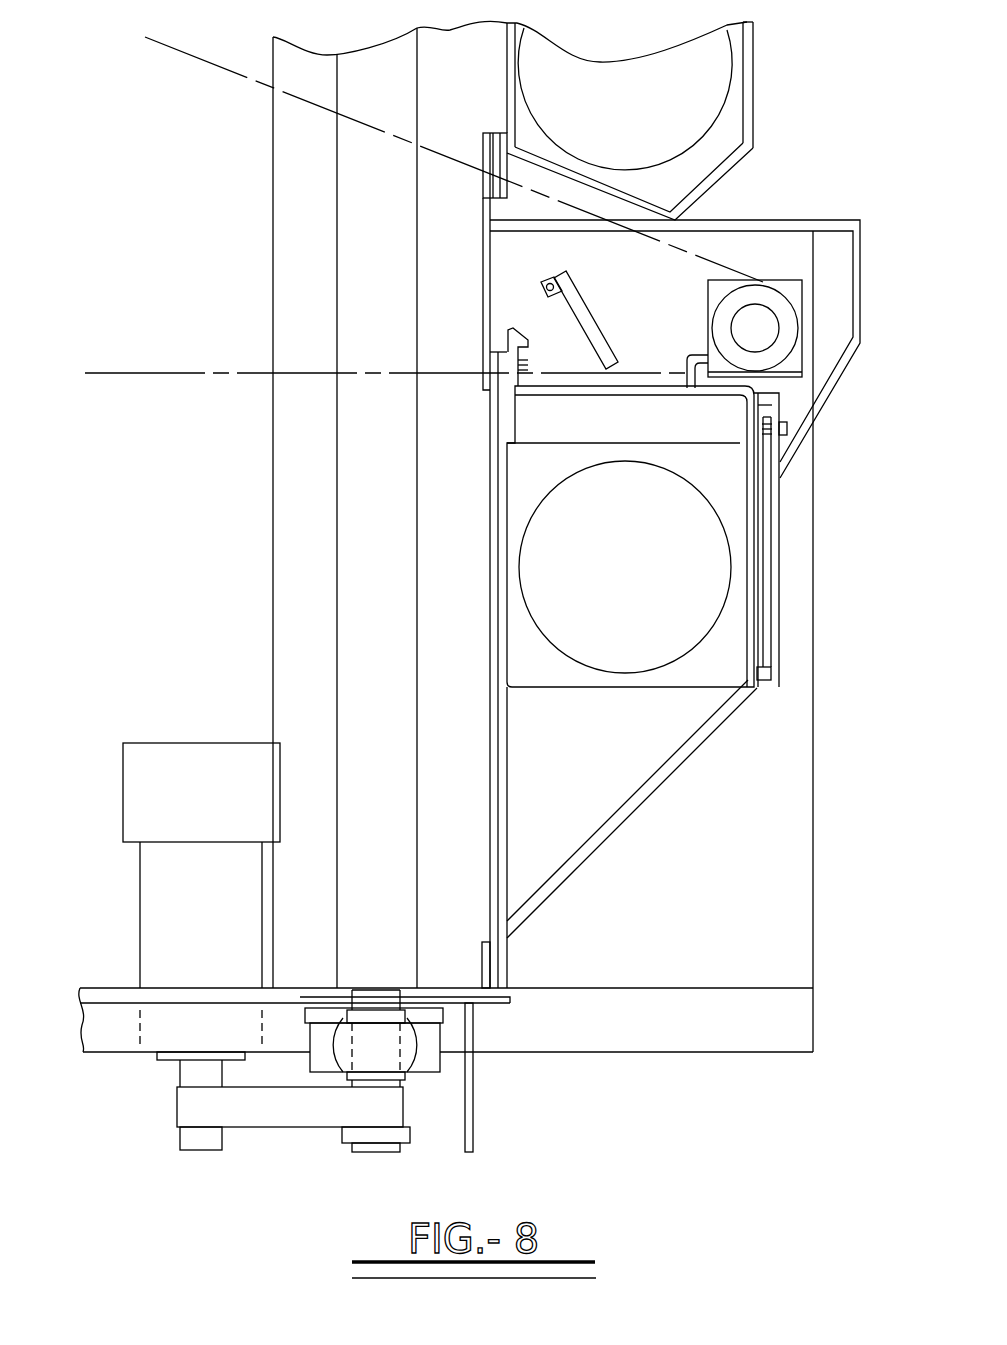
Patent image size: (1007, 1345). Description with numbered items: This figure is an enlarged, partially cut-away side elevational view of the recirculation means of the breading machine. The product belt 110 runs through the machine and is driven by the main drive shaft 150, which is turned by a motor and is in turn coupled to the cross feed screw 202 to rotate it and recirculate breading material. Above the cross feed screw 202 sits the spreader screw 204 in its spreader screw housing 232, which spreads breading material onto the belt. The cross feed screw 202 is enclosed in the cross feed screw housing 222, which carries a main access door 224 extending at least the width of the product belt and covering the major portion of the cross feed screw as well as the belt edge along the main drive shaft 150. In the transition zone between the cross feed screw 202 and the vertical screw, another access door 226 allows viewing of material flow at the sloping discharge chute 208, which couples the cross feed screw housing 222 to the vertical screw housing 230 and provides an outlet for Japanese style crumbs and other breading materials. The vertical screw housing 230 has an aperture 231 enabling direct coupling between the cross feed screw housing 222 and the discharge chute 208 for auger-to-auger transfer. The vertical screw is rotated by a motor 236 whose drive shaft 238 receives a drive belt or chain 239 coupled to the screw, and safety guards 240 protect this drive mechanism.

The product belt 110 is at (203, 373).
The main drive shaft 150 is at (752, 323).
The cross feed screw 202 is at (695, 594).
The spreader screw 204 is at (688, 118).
The discharge chute 208 is at (647, 793).
The cross feed screw housing 222 is at (727, 664).
The main access door 224 is at (830, 399).
The access door 226 is at (780, 550).
The vertical screw housing 230 is at (365, 552).
The aperture 231 is at (489, 645).
The spreader screw housing 232 is at (755, 60).
The motor 236 is at (182, 743).
The drive shaft 238 is at (196, 1152).
The drive belt or chain 239 is at (310, 1110).
The safety guards 240 is at (475, 1092).